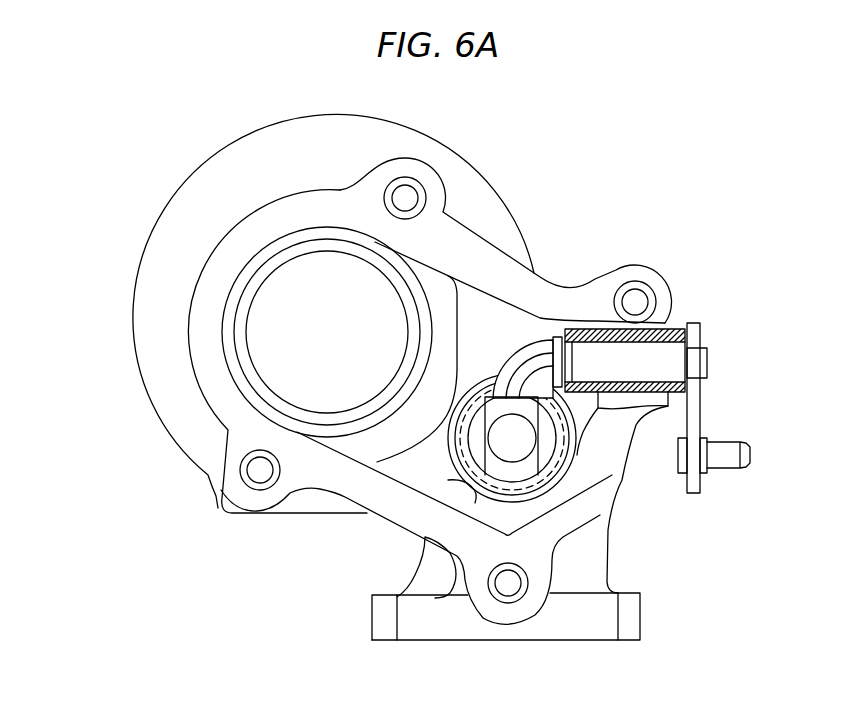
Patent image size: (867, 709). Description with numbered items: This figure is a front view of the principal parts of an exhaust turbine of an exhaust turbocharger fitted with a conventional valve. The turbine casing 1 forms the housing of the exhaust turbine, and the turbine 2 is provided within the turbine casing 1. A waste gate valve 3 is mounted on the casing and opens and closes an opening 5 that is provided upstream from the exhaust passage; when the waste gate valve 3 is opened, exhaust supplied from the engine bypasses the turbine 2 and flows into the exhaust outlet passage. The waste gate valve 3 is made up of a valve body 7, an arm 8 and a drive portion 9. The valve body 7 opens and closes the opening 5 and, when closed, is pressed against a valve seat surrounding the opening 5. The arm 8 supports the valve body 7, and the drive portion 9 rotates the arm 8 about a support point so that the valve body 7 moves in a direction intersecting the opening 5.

The turbine casing 1 is at (116, 253).
The turbine 2 is at (272, 352).
The waste gate valve 3 is at (428, 452).
The opening 5 is at (455, 477).
The valve body 7 is at (585, 455).
The arm 8 is at (542, 357).
The drive portion 9 is at (722, 328).